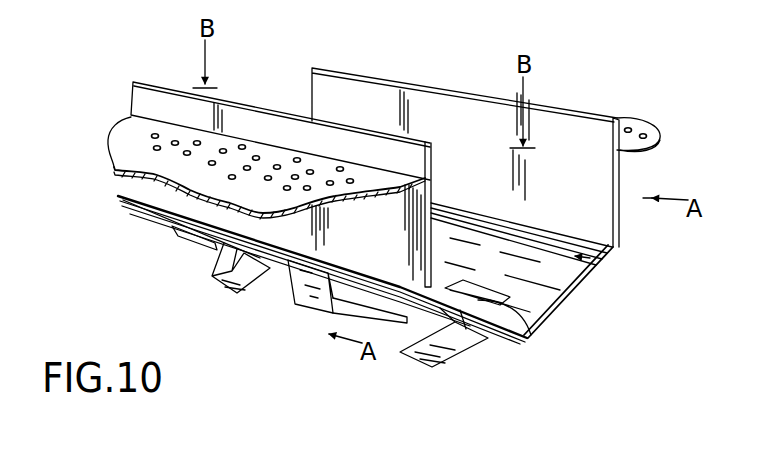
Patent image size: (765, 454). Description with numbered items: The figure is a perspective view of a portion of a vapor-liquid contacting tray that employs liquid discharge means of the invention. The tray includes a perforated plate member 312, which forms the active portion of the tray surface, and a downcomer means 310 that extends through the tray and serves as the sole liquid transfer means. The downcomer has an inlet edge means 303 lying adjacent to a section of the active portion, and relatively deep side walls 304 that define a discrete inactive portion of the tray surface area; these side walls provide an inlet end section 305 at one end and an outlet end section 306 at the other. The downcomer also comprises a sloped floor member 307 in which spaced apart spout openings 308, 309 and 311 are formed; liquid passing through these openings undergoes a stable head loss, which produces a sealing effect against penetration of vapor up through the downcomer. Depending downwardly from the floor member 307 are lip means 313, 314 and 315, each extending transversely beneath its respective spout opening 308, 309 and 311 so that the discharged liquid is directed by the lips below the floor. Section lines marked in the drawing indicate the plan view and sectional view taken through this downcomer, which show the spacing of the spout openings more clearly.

The inlet edge means 303 is at (257, 122).
The side walls 304 is at (436, 197).
The inlet end section 305 is at (379, 104).
The outlet end section 306 is at (617, 248).
The sloped floor member 307 is at (586, 276).
The spout opening 308 is at (529, 339).
The spout opening 309 is at (328, 312).
The downcomer means 310 is at (590, 321).
The spout opening 311 is at (226, 255).
The perforated plate member 312 is at (126, 144).
The lip means 313 is at (437, 378).
The lip means 314 is at (288, 329).
The lip means 315 is at (234, 304).